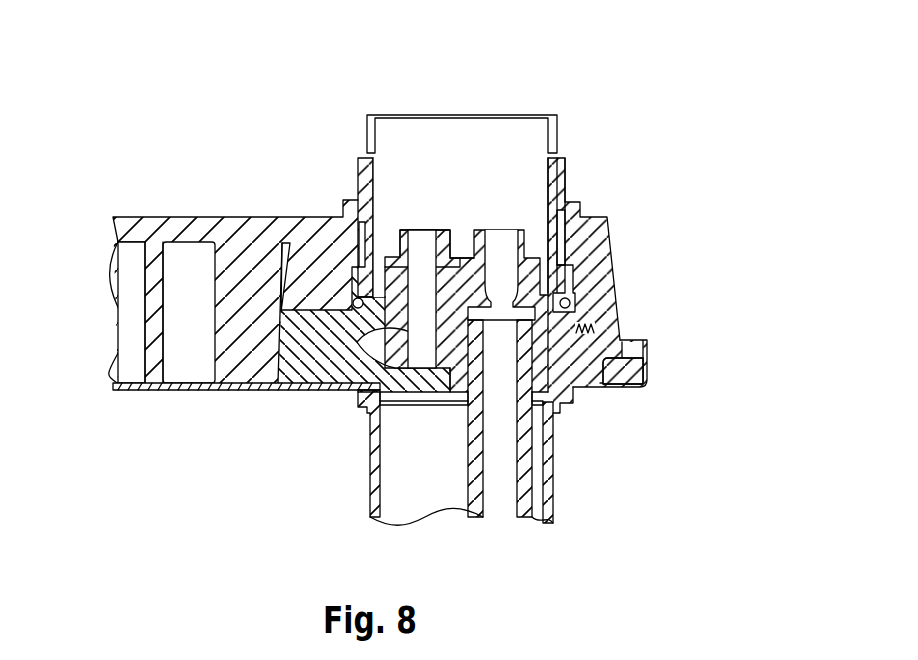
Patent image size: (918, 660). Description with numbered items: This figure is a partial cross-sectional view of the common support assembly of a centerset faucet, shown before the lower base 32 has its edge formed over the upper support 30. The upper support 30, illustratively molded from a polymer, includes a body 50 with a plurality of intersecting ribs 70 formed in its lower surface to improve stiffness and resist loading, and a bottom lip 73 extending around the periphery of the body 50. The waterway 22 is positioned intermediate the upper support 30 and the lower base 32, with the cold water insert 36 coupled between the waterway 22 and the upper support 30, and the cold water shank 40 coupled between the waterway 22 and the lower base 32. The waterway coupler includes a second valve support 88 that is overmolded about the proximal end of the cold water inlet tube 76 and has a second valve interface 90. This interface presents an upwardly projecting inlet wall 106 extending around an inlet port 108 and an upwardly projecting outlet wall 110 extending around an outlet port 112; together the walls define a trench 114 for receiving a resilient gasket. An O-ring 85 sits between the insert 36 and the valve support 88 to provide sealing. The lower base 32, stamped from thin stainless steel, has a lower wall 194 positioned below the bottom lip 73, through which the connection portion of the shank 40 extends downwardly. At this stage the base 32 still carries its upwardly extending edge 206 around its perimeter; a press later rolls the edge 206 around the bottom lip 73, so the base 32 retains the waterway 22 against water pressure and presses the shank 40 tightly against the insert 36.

The waterway 22 is at (330, 395).
The upper support 30 is at (625, 210).
The lower base 32 is at (117, 388).
The cold water insert 36 is at (557, 128).
The cold water shank 40 is at (553, 463).
The body 50 is at (170, 225).
The intersecting ribs 70 is at (155, 388).
The bottom lip 73 is at (640, 368).
The cold water inlet tube 76 is at (525, 502).
The O-ring 85 is at (566, 305).
The second valve support 88 is at (580, 318).
The second valve interface 90 is at (476, 247).
The inlet wall 106 is at (565, 177).
The inlet port 108 is at (500, 245).
The outlet wall 110 is at (398, 232).
The outlet port 112 is at (425, 237).
The trench 114 is at (463, 245).
The lower wall 194 is at (235, 388).
The upwardly extending edge 206 is at (647, 347).